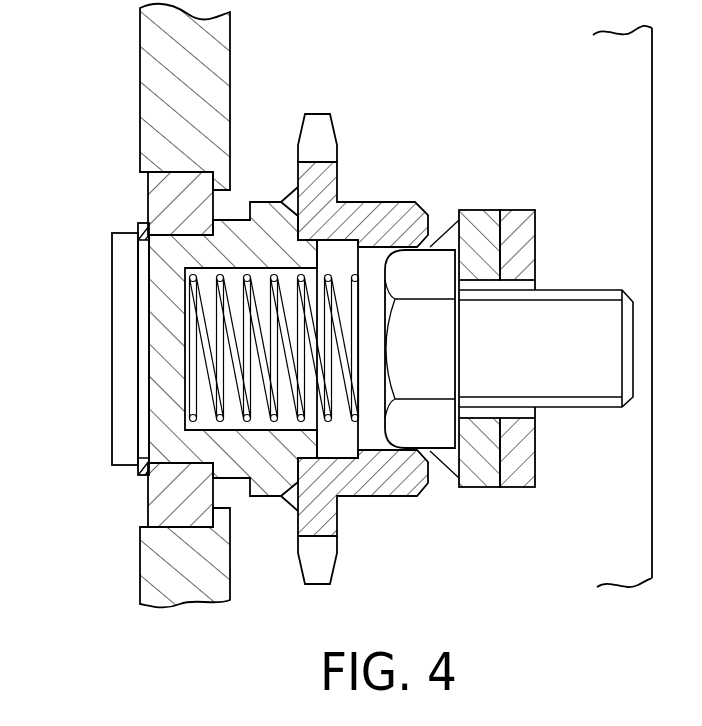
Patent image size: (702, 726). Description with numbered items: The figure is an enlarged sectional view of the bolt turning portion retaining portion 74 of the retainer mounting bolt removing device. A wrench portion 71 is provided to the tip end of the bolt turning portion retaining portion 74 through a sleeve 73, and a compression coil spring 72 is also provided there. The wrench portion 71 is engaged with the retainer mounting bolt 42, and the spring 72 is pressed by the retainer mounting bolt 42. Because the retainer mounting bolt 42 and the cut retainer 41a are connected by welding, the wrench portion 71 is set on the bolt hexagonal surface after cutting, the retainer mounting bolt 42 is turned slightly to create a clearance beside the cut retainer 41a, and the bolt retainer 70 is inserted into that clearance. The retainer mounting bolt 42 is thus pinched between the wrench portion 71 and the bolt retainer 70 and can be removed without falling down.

The bolt turning portion retaining portion 74 is at (140, 74).
The sleeve 73 is at (147, 200).
The spring 72 is at (190, 323).
The wrench portion 71 is at (380, 201).
The retainer mounting bolt 42 is at (428, 438).
The cut retainer 41a is at (483, 487).
The bolt retainer 70 is at (533, 487).